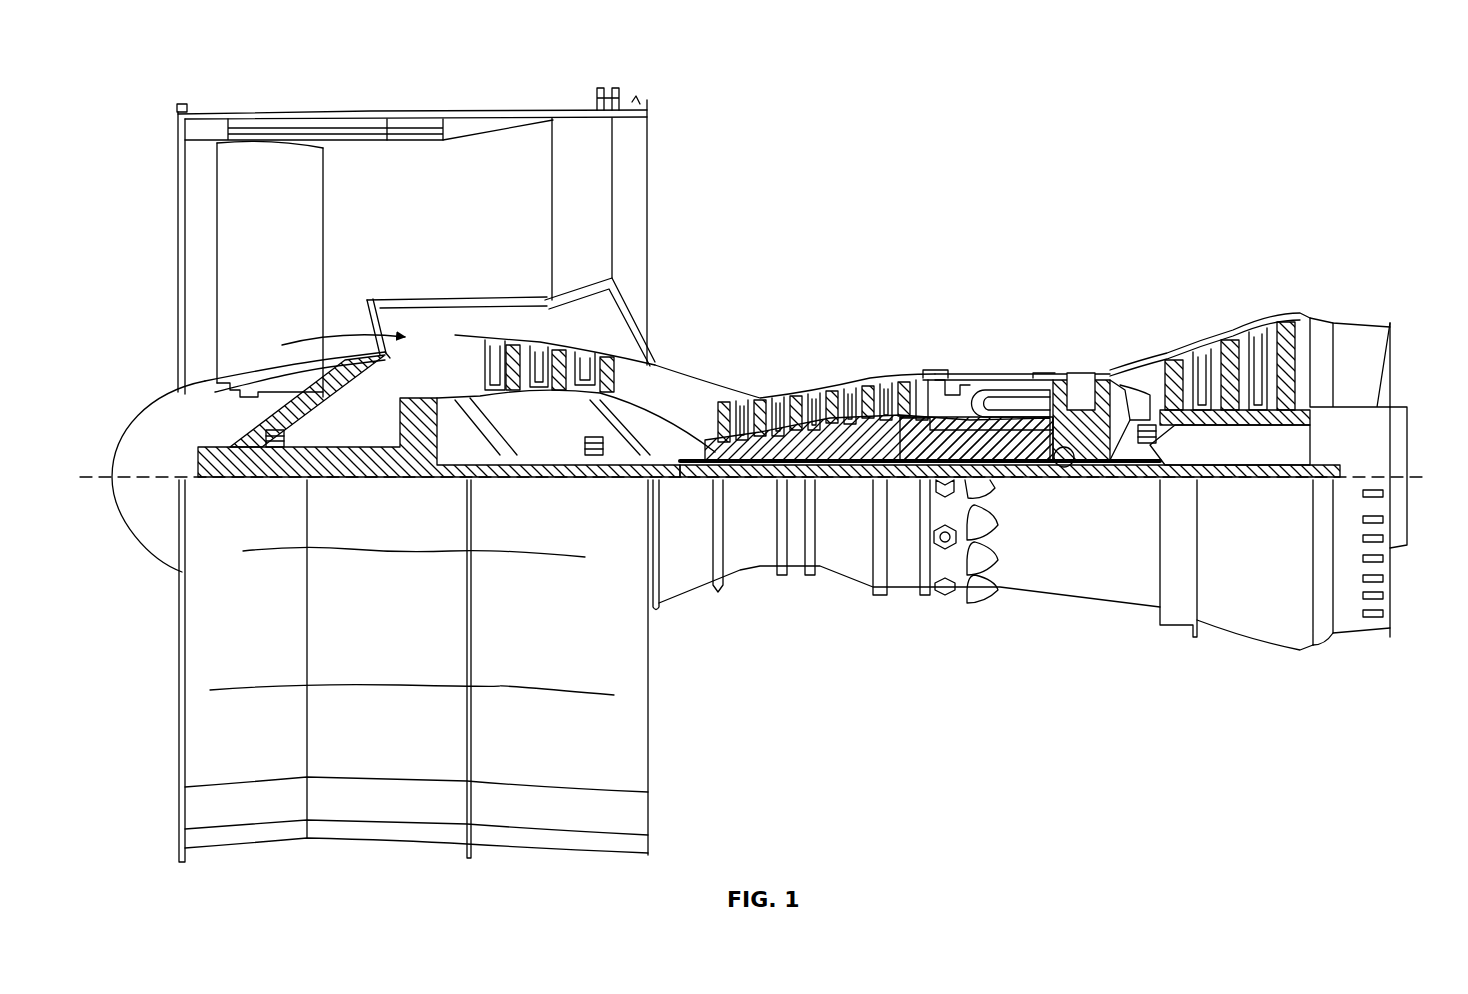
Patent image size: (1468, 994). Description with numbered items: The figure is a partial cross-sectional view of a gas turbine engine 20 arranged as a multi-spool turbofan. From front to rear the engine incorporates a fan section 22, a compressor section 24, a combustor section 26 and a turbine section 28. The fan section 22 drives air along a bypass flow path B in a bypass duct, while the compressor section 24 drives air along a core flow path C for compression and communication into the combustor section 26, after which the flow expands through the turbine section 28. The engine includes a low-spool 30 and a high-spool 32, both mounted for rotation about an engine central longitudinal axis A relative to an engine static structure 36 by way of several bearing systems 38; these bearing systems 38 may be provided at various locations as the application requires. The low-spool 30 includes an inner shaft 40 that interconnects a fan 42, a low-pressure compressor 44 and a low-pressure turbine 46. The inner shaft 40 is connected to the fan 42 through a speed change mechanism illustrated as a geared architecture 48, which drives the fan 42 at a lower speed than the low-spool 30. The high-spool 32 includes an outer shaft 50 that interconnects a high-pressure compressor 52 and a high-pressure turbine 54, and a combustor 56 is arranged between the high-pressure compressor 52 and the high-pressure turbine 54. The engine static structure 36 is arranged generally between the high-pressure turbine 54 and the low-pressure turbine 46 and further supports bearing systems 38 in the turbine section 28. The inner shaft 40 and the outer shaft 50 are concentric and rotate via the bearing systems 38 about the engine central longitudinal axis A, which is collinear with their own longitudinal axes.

The gas turbine engine 20 is at (1255, 158).
The fan section 22 is at (367, 100).
The compressor section 24 is at (812, 310).
The combustor section 26 is at (1007, 310).
The turbine section 28 is at (1163, 310).
The low-spool 30 is at (853, 490).
The high-spool 32 is at (905, 430).
The engine static structure 36 is at (900, 600).
The bearing systems 38 is at (275, 447).
The inner shaft 40 is at (678, 480).
The fan 42 is at (285, 248).
The low-pressure compressor 44 is at (540, 340).
The low-pressure turbine 46 is at (1240, 340).
The geared architecture 48 is at (423, 455).
The outer shaft 50 is at (1068, 466).
The high-pressure compressor 52 is at (822, 445).
The high-pressure turbine 54 is at (1075, 372).
The combustor 56 is at (1010, 400).
The engine central longitudinal axis A is at (1420, 470).
The bypass flow path B is at (470, 204).
The core flow path C is at (300, 330).